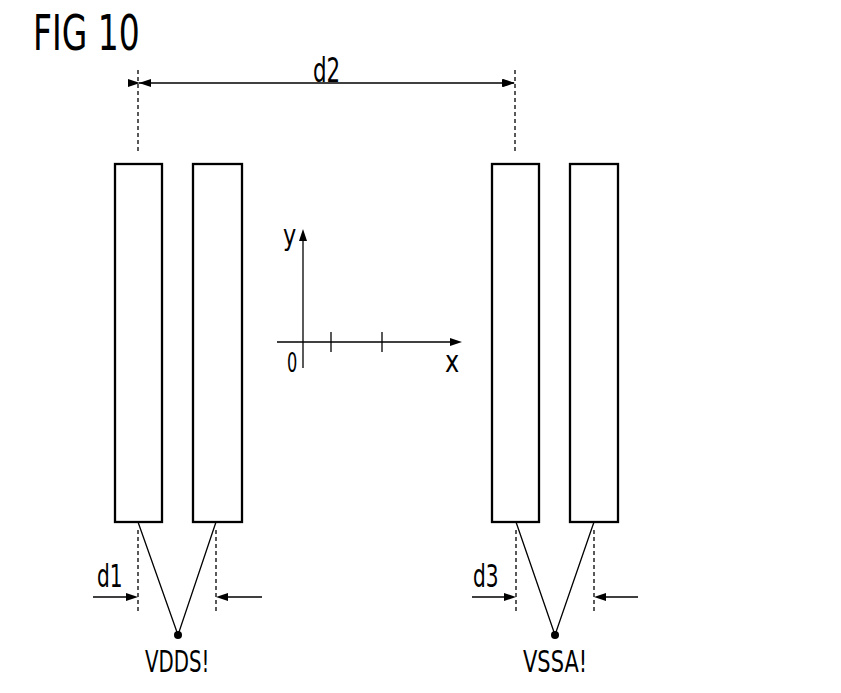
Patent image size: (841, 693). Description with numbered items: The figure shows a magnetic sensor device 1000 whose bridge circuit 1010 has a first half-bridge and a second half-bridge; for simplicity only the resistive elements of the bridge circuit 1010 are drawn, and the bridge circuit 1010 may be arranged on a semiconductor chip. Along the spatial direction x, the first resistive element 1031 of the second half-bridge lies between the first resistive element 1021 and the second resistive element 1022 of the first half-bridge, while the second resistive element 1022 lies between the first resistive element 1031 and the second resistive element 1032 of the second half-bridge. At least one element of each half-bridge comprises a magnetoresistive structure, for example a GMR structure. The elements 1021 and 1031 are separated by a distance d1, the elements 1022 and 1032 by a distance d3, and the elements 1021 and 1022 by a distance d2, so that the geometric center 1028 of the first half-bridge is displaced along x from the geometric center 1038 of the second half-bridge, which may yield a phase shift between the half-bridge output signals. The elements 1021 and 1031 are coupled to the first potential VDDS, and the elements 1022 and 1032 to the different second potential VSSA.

The magnetic sensor device 1000 is at (747, 674).
The bridge circuit 1010 is at (673, 140).
The first resistive element of the first half-bridge 1021 is at (126, 181).
The second resistive element of the first half-bridge 1022 is at (503, 182).
The first resistive element of the second half-bridge 1031 is at (230, 182).
The second resistive element of the second half-bridge 1032 is at (607, 182).
The geometric center of the first half-bridge 1028 is at (331, 352).
The geometric center of the second half-bridge 1038 is at (383, 359).